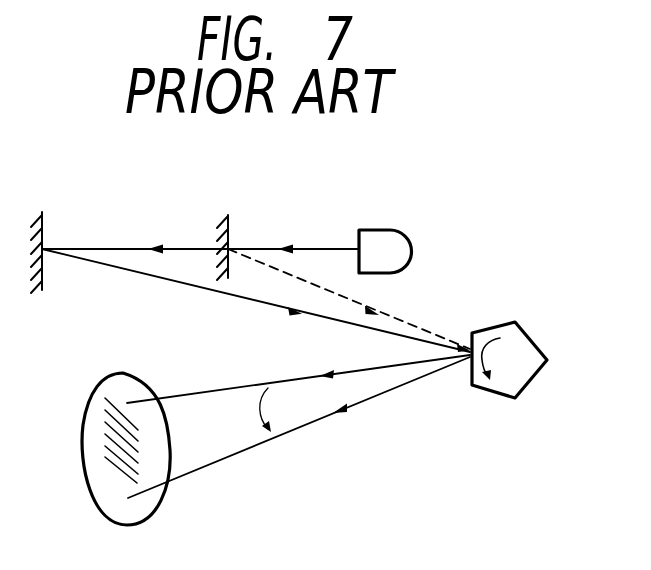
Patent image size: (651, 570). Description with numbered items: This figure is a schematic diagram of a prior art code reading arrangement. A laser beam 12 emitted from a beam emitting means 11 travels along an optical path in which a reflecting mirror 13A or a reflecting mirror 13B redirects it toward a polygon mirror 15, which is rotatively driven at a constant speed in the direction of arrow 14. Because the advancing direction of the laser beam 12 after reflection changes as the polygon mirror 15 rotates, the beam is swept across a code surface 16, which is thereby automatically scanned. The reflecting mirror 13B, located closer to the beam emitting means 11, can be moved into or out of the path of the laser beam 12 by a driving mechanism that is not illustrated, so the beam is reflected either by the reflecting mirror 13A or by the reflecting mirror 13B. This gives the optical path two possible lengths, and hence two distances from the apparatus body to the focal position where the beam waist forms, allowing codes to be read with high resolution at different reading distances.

The beam emitting means 11 is at (390, 236).
The laser beam 12 is at (318, 247).
The reflecting mirror 13A is at (43, 269).
The reflecting mirror 13B is at (229, 238).
The arrow 14 is at (522, 332).
The polygon mirror 15 is at (528, 372).
The code surface 16 is at (98, 472).